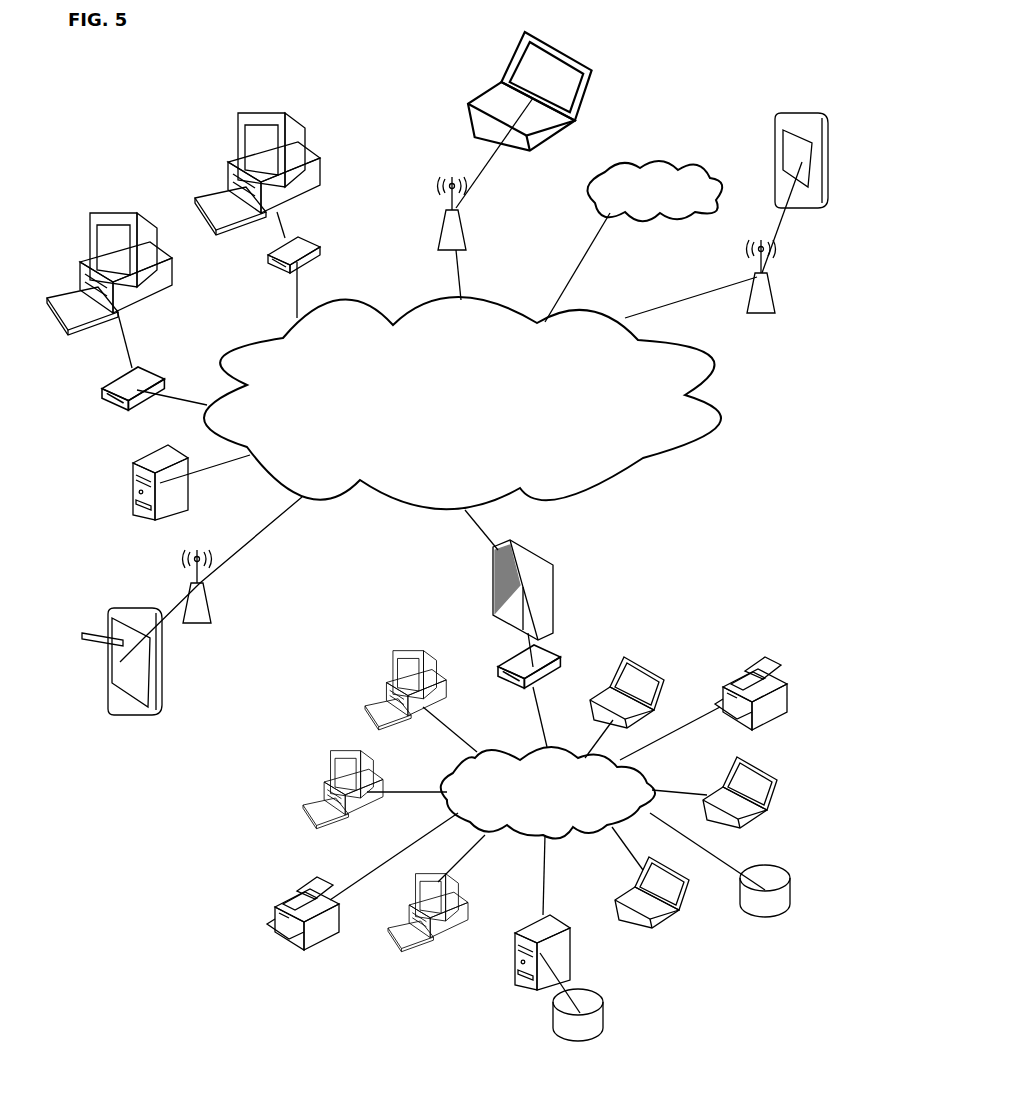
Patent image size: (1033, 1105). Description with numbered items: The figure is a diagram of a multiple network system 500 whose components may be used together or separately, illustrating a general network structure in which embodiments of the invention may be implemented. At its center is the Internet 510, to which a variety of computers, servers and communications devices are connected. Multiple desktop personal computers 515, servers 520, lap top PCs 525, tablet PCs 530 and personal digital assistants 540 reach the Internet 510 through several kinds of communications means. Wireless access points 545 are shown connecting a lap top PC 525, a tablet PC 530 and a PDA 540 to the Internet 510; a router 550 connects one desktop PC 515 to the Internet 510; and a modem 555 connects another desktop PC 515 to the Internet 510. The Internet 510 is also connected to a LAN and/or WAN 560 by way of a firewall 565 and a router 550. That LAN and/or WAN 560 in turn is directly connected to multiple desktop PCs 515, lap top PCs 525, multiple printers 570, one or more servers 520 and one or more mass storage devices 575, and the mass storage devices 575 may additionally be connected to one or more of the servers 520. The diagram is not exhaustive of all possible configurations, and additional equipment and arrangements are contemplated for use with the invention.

The network system 500 is at (342, 82).
The Internet 510 is at (407, 497).
The desktop personal computer 515 is at (245, 122).
The server 520 is at (150, 512).
The lap top PC 525 is at (468, 107).
The tablet PC 530 is at (142, 695).
The personal digital assistant 540 is at (775, 128).
The wireless access point 545 is at (448, 228).
The router 550 is at (278, 263).
The modem 555 is at (123, 385).
The LAN and/or WAN 560 is at (593, 202).
The firewall 565 is at (502, 570).
The printer 570 is at (762, 677).
The mass storage device 575 is at (778, 877).